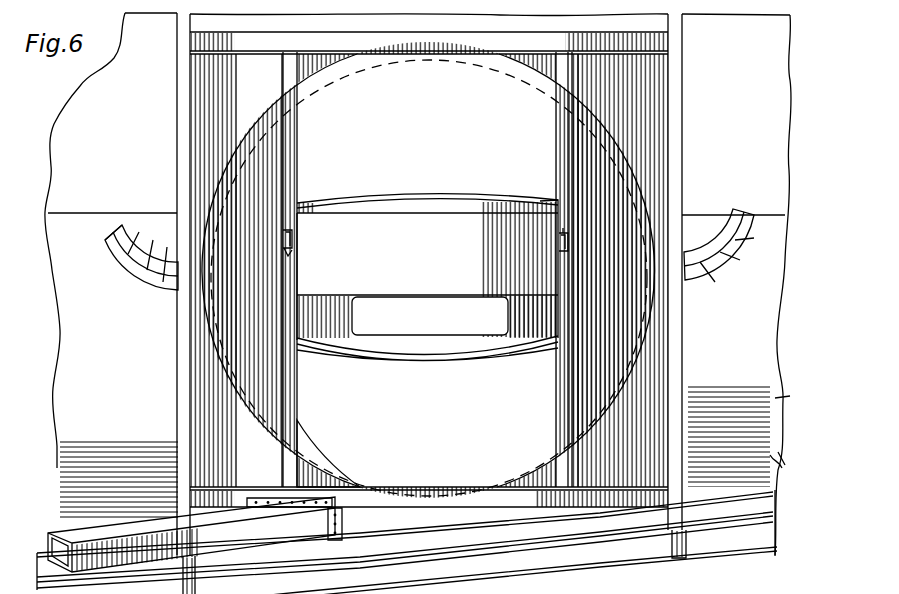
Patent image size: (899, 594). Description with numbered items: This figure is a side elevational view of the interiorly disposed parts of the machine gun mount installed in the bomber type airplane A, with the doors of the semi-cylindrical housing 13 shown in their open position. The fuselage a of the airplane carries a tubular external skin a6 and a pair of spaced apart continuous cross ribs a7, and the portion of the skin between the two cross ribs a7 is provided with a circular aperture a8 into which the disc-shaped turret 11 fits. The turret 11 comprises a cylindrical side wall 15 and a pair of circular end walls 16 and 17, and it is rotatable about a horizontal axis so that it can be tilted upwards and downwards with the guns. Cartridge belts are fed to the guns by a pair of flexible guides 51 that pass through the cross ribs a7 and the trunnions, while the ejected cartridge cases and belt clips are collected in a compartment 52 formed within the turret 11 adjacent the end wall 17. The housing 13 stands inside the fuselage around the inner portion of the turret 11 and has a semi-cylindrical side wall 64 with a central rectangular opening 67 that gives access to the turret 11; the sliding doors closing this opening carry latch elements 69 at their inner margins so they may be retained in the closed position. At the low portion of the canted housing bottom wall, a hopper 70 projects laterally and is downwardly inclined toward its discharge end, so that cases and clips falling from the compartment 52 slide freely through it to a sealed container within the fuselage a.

The turret 11 is at (444, 200).
The housing 13 is at (655, 321).
The cylindrical side wall 15 is at (427, 271).
The circular end wall 16 is at (548, 196).
The circular end wall 17 is at (405, 356).
The flexible guides 51 is at (128, 237).
The compartment 52 is at (468, 340).
The semi-cylindrical side wall 64 is at (566, 373).
The rectangular opening 67 is at (570, 414).
The latch elements 69 is at (293, 238).
The hopper 70 is at (108, 525).
The cross ribs a7 is at (680, 118).
The circular aperture a8 is at (322, 470).
The external skin a6 is at (791, 395).
The fuselage a is at (784, 465).
The airplane A is at (729, 411).